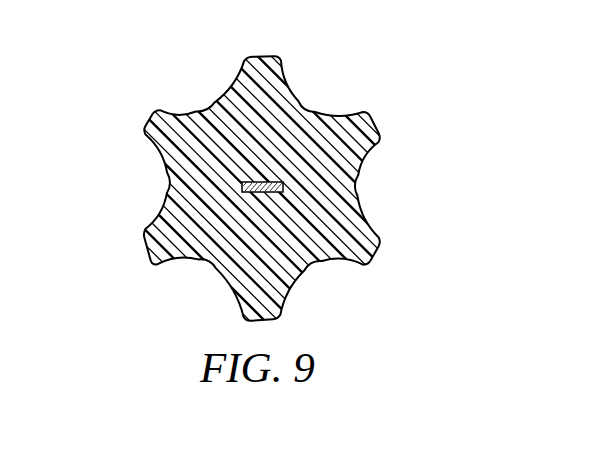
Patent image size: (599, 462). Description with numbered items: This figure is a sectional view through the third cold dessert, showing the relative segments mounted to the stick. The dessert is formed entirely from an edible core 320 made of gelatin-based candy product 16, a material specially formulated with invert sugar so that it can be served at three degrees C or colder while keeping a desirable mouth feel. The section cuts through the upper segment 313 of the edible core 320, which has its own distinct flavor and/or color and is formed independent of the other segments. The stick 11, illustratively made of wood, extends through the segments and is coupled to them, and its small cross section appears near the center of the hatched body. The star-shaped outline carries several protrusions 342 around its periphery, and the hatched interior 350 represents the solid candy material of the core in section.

The edible core 320 is at (193, 84).
The protrusions 342 is at (262, 57).
The gelatin-based candy product 16 is at (303, 112).
The upper segment 313 is at (388, 187).
The stick 11 is at (250, 201).
The solid body material 350 is at (290, 256).